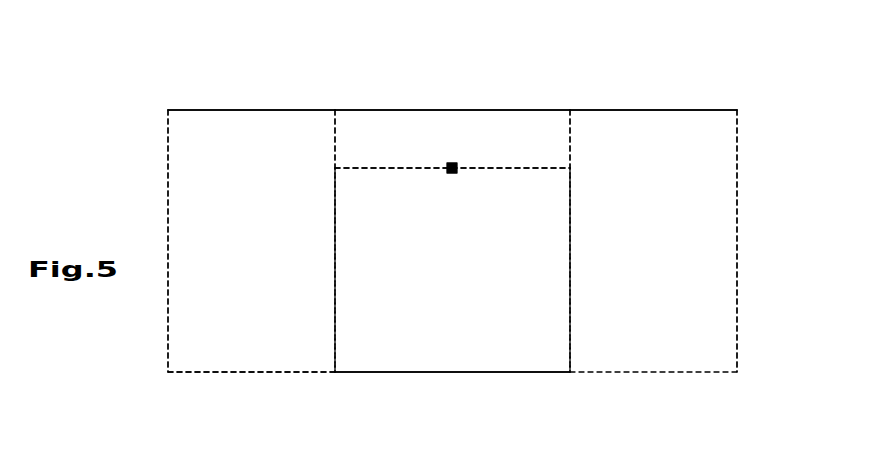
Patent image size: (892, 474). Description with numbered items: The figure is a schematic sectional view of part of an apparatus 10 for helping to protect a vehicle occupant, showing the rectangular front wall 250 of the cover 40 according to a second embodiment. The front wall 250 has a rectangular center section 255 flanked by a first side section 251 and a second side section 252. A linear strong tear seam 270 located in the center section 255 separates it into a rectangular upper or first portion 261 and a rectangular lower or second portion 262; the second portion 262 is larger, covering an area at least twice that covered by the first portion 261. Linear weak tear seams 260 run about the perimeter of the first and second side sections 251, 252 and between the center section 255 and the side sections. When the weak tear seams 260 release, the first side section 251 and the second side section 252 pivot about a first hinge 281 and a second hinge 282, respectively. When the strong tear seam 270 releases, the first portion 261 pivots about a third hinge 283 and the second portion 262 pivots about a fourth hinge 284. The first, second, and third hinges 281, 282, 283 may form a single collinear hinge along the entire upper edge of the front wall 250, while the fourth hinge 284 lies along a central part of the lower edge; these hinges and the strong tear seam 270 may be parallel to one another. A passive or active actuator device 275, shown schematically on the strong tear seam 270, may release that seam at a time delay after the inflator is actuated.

The apparatus 10 is at (790, 62).
The cover 40 is at (797, 133).
The front wall 250 is at (145, 128).
The first side section 251 is at (197, 394).
The second side section 252 is at (683, 401).
The center section 255 is at (453, 401).
The weak tear seams 260 is at (167, 247).
The first portion 261 is at (503, 142).
The second portion 262 is at (400, 331).
The strong tear seam 270 is at (538, 168).
The actuator device 275 is at (452, 174).
The first hinge 281 is at (265, 110).
The second hinge 282 is at (698, 110).
The third hinge 283 is at (447, 110).
The fourth hinge 284 is at (548, 374).